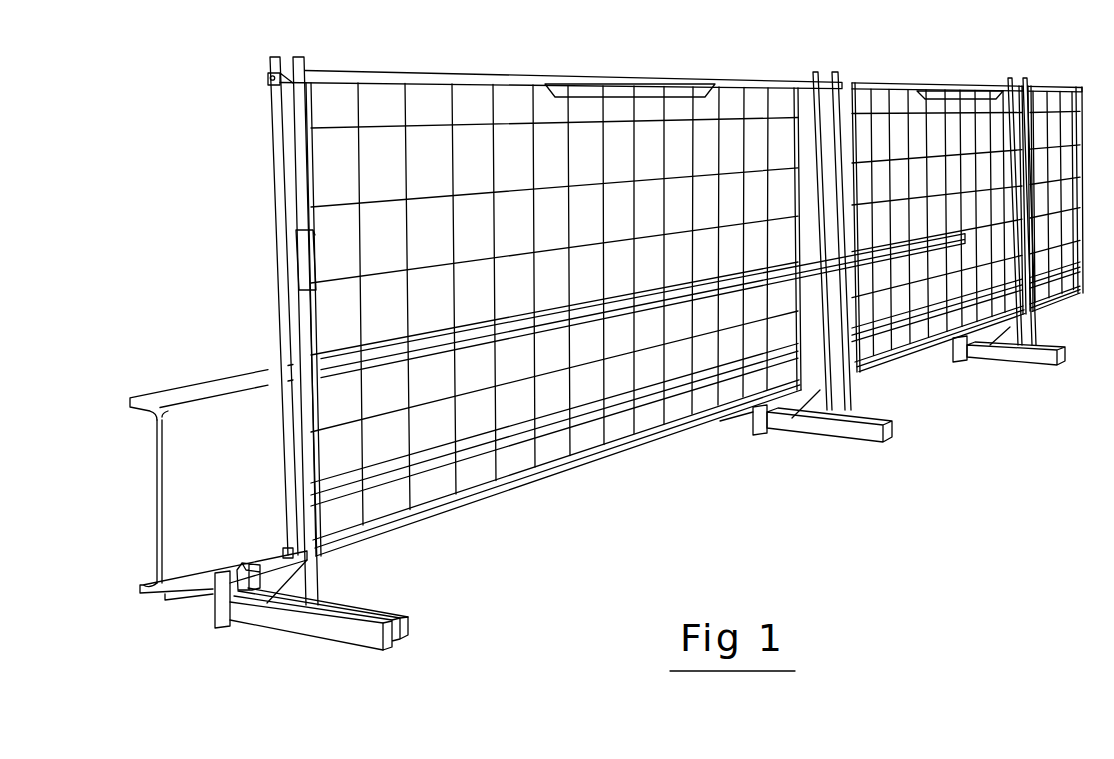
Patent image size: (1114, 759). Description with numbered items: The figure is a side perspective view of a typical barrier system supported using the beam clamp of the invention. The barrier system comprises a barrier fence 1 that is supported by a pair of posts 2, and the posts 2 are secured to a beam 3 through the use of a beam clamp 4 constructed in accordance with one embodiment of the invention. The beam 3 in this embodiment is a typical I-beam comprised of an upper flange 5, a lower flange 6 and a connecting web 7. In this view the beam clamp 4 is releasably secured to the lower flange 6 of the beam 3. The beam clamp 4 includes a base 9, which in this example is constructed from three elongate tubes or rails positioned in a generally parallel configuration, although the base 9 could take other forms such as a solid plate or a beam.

The barrier fence 1 is at (484, 92).
The posts 2 is at (305, 262).
The beam 3 is at (519, 452).
The beam clamp 4 is at (624, 523).
The upper flange 5 is at (195, 383).
The lower flange 6 is at (153, 587).
The connecting web 7 is at (157, 442).
The base 9 is at (325, 630).